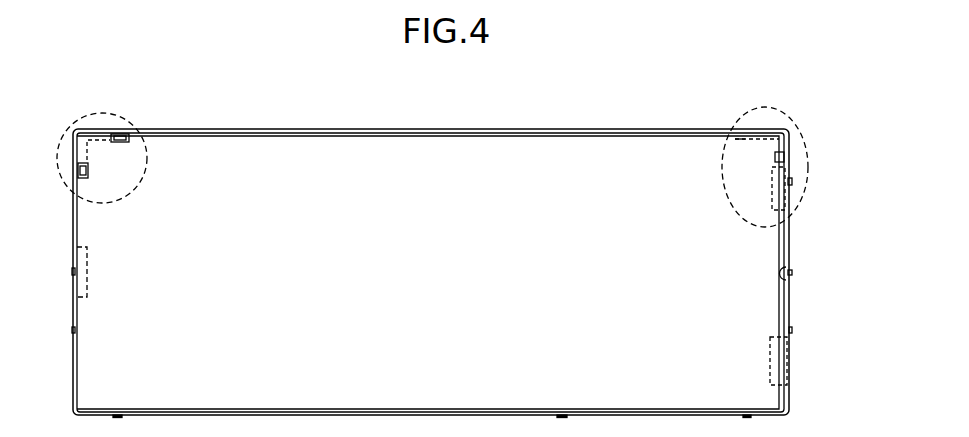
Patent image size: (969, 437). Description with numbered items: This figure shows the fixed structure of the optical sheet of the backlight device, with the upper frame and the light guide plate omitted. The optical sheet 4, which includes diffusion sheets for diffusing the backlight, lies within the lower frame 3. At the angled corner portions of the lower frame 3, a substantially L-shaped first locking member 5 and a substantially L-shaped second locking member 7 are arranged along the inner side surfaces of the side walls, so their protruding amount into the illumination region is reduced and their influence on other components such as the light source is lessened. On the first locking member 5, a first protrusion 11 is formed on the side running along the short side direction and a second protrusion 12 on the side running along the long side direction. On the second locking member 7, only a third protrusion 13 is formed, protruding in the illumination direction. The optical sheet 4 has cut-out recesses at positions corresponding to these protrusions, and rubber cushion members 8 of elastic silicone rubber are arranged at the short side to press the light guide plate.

The lower frame 3 is at (782, 302).
The optical sheet 4 is at (592, 170).
The first locking member 5 is at (101, 140).
The second locking member 7 is at (750, 137).
The rubber cushion member 8 is at (782, 197).
The first protrusion 11 is at (80, 168).
The second protrusion 12 is at (118, 136).
The third protrusion 13 is at (776, 157).